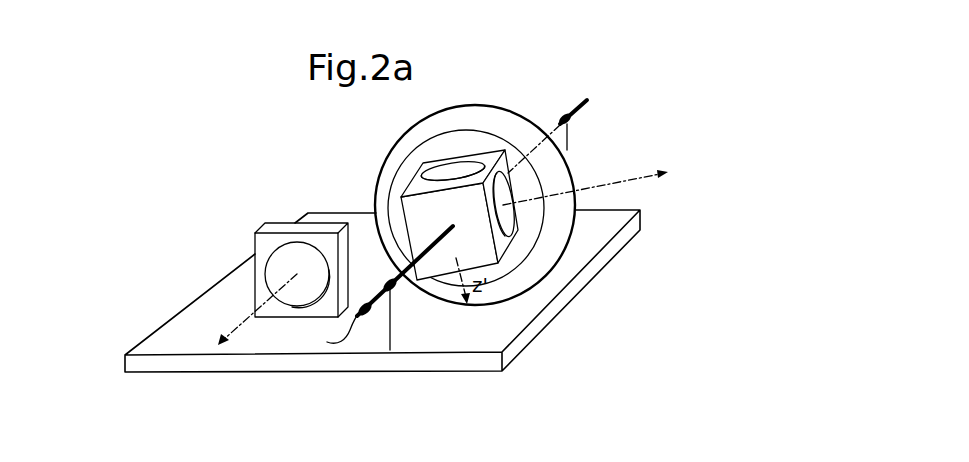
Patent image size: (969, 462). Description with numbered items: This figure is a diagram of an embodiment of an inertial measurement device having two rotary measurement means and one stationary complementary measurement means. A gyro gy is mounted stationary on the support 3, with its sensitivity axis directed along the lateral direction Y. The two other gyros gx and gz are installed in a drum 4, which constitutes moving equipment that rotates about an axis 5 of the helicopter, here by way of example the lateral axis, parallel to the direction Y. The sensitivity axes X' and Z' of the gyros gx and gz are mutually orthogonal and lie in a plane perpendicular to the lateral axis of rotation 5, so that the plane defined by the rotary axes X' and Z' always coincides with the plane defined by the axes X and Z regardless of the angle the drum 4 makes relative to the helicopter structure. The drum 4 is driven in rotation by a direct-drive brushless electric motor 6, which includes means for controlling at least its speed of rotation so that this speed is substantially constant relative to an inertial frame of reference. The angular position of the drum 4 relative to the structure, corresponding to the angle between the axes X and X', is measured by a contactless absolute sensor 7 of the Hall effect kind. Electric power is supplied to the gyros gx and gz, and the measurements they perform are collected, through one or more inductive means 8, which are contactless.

The support 3 is at (158, 331).
The drum 4 is at (570, 158).
The axis 5 is at (432, 246).
The direct-drive brushless electric motor 6 is at (571, 100).
The contactless absolute sensor 7 is at (402, 296).
The inductive means 8 is at (376, 325).
The gyro gx is at (517, 227).
The gyro gy is at (255, 257).
The gyro gz is at (402, 192).